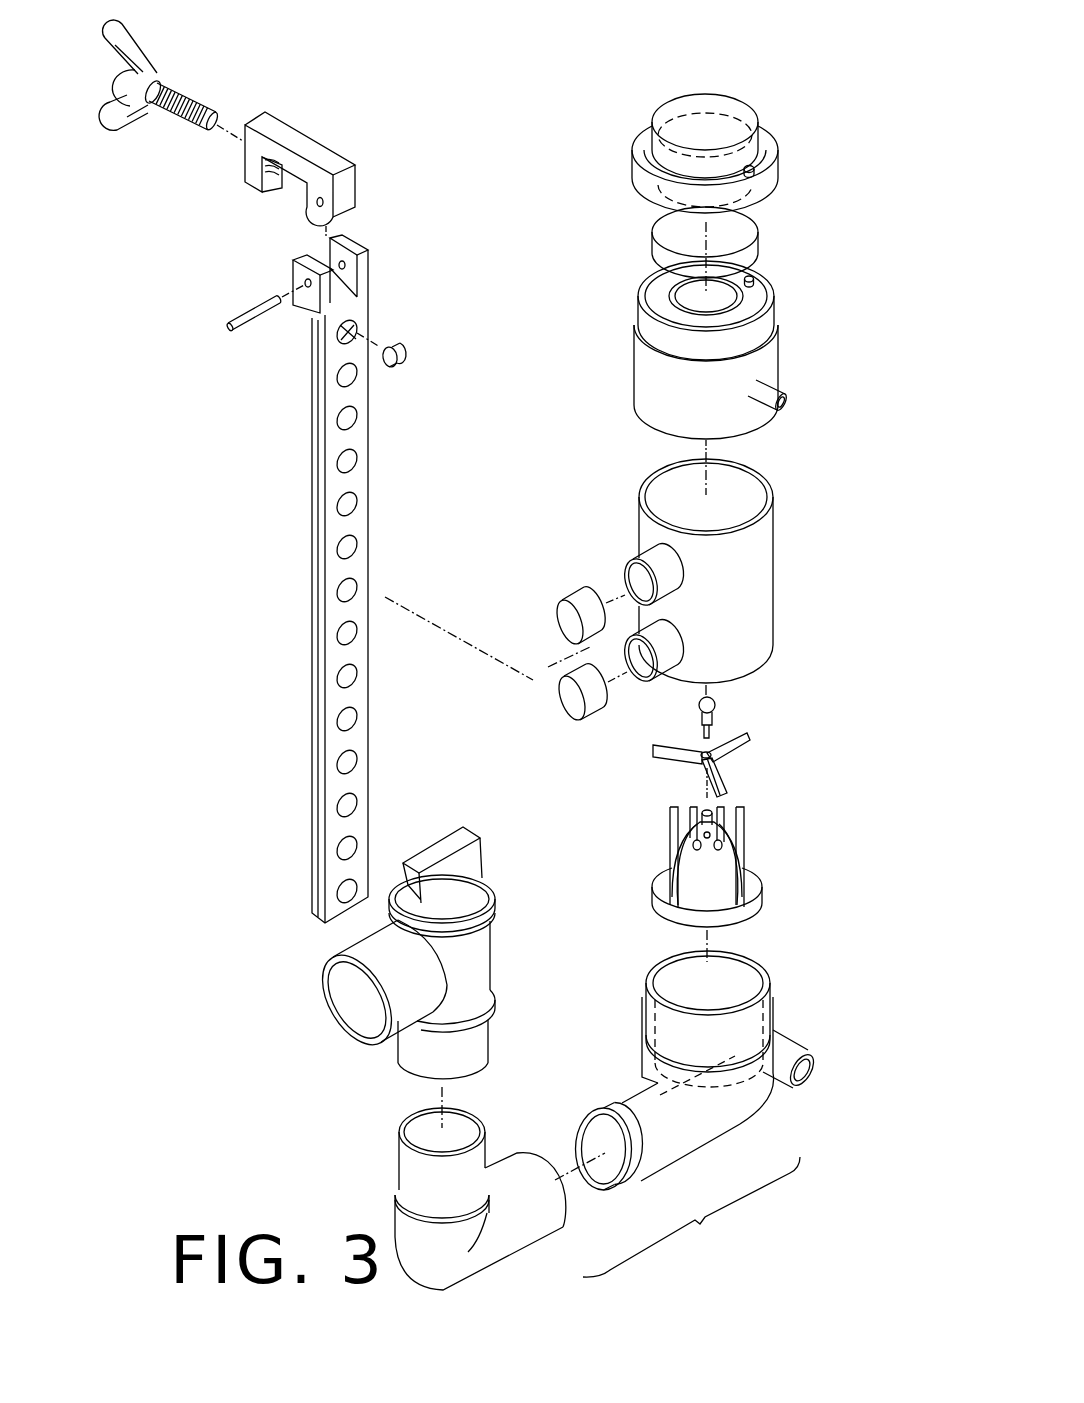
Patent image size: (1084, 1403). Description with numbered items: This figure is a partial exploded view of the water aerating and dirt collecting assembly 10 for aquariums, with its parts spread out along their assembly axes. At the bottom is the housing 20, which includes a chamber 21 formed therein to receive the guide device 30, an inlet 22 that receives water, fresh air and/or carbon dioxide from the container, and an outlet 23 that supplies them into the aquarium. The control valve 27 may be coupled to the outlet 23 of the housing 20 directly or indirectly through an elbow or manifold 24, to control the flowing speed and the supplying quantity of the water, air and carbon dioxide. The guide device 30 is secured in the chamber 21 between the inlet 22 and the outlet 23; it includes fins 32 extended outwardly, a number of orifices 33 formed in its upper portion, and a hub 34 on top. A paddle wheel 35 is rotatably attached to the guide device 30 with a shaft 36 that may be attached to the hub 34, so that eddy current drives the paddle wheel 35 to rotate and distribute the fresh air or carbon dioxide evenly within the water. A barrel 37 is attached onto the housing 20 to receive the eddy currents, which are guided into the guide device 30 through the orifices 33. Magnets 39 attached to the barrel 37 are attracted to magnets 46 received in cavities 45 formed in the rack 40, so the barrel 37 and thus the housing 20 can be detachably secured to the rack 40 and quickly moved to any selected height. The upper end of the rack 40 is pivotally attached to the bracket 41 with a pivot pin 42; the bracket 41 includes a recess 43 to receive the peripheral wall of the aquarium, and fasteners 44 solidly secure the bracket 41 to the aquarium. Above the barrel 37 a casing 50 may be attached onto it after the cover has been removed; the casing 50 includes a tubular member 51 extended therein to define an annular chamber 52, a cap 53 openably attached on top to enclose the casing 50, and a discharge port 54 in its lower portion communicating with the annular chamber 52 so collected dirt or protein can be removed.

The water aerating and dirt collecting assembly 10 is at (848, 636).
The housing 20 is at (773, 1008).
The chamber 21 is at (670, 982).
The inlet 22 is at (805, 1073).
The outlet 23 is at (682, 1157).
The elbow 24 is at (407, 1215).
The control valve 27 is at (480, 947).
The guide device 30 is at (718, 895).
The fins 32 is at (738, 850).
The orifices 33 is at (710, 838).
The hub 34 is at (700, 808).
The paddle wheel 35 is at (743, 747).
The shaft 36 is at (713, 718).
The barrel 37 is at (773, 570).
The magnets 39 is at (560, 623).
The rack 40 is at (312, 564).
The bracket 41 is at (312, 152).
The pivot pin 42 is at (248, 325).
The recess 43 is at (292, 193).
The fasteners 44 is at (185, 103).
The cavities 45 is at (353, 327).
The magnets 46 is at (401, 364).
The casing 50 is at (648, 387).
The tubular member 51 is at (728, 302).
The annular chamber 52 is at (655, 297).
The cap 53 is at (707, 105).
The discharge port 54 is at (790, 407).